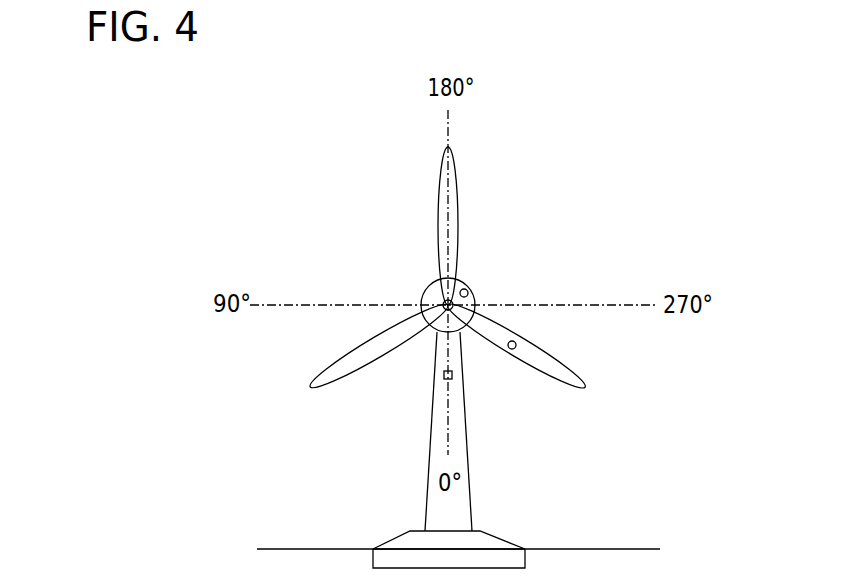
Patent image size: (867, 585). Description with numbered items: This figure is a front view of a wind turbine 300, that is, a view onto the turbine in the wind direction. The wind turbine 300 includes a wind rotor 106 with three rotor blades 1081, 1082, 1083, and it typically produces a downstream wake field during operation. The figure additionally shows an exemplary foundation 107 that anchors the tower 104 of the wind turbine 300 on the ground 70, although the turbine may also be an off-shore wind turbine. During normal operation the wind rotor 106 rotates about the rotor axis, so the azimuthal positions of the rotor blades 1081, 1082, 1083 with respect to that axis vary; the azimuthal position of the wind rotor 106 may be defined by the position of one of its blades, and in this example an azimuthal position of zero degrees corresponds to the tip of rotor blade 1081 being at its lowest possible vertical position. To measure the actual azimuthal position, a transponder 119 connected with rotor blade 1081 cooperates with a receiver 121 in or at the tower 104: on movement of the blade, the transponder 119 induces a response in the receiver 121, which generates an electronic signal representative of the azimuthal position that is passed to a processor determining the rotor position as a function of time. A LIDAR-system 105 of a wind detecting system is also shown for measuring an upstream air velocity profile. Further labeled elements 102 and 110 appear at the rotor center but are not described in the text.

The wind turbine 300 is at (591, 99).
The ground 70 is at (317, 541).
The foundation 107 is at (478, 538).
The tower 104 is at (432, 405).
The receiver 121 is at (444, 376).
The hub 102 is at (437, 287).
The rotor axis 110 is at (442, 303).
The LIDAR-system 105 is at (467, 290).
The wind rotor 106 is at (503, 287).
The rotor blade 1081 is at (552, 368).
The rotor blade 1082 is at (380, 343).
The rotor blade 1083 is at (452, 208).
The transponder 119 is at (512, 349).